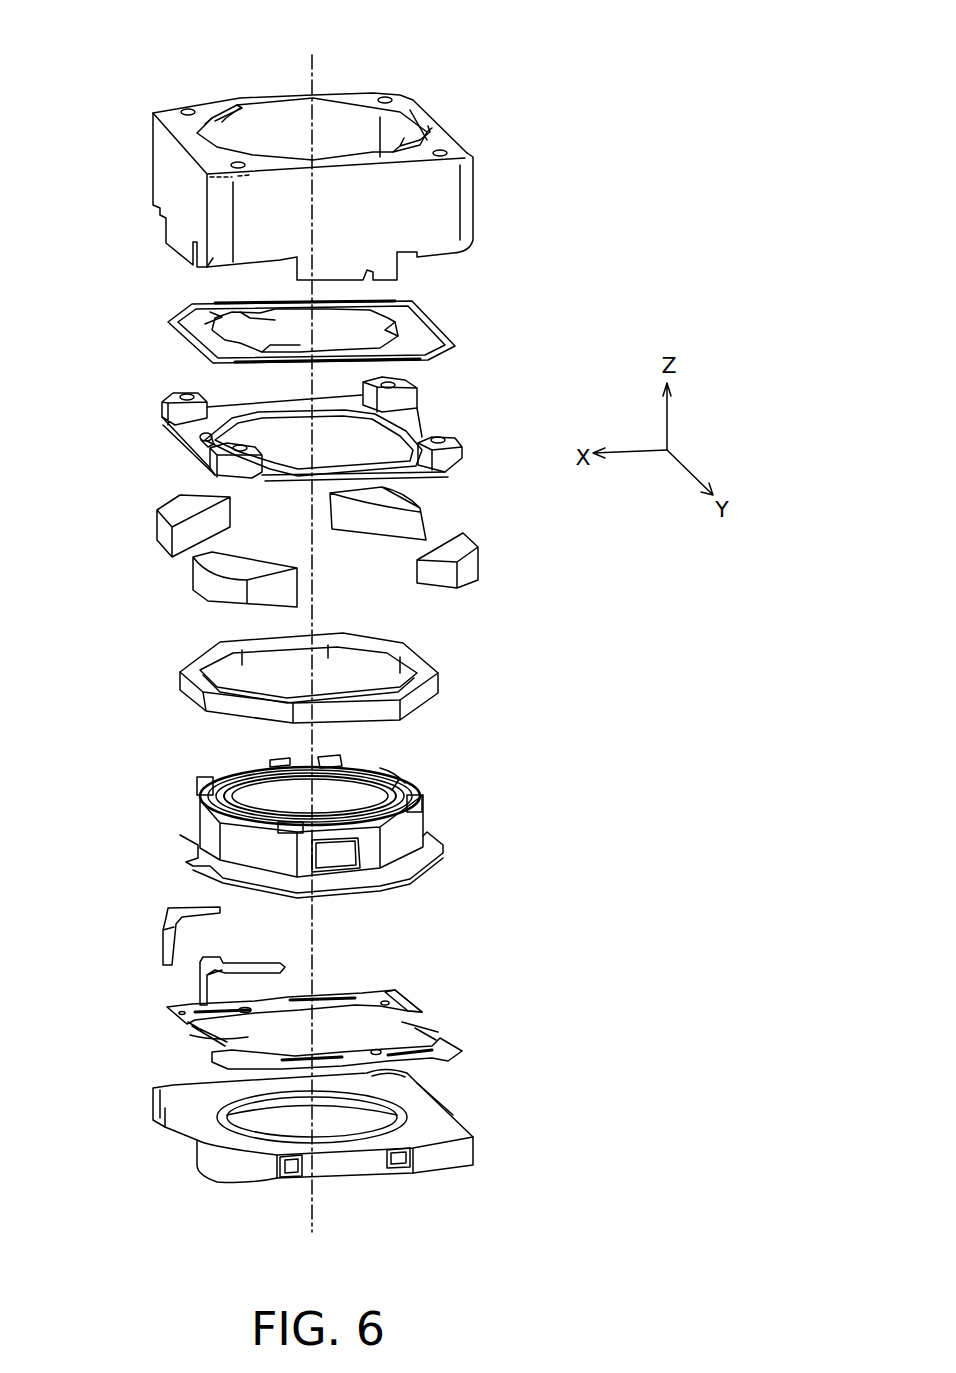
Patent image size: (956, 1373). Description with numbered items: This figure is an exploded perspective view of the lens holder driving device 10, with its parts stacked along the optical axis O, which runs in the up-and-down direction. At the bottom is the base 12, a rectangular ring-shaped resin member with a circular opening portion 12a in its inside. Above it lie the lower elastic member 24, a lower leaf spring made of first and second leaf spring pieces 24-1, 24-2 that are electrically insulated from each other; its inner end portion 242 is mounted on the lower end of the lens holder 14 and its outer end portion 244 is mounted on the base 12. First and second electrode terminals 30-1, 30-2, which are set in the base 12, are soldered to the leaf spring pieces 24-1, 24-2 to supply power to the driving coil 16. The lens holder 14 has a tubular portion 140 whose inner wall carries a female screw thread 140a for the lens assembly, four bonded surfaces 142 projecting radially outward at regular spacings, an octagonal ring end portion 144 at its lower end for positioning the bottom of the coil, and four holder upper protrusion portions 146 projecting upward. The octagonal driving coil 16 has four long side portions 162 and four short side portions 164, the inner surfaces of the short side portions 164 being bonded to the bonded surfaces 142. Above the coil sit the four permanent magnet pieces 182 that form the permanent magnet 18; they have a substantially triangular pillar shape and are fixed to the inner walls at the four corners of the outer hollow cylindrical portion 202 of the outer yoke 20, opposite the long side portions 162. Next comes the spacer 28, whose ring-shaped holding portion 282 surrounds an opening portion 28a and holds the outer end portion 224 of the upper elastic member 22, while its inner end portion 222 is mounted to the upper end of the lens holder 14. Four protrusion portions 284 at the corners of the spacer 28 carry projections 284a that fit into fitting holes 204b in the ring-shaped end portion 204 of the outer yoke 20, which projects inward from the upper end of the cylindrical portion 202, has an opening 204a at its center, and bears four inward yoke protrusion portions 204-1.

The lens holder driving device 10 is at (552, 74).
The base 12 is at (497, 1150).
The circular opening portion 12a is at (395, 1081).
The lens holder 14 is at (409, 766).
The tubular portion 140 is at (412, 813).
The female screw thread 140a is at (400, 778).
The bonded surface 142 is at (330, 857).
The ring end portion 144 is at (420, 873).
The holder upper protrusion portion 146 is at (340, 755).
The driving coil 16 is at (438, 647).
The long side portion 162 is at (383, 637).
The short side portion 164 is at (280, 635).
The permanent magnet 18 is at (120, 545).
The permanent magnet piece 182 is at (156, 505).
The outer yoke 20 is at (496, 204).
The outer hollow cylindrical portion 202 is at (435, 248).
The ring-shaped end portion 204 is at (412, 92).
The opening 204a is at (420, 112).
The cover hole 204b is at (185, 108).
The yoke protrusion portion 204-1 is at (357, 100).
The upper elastic member 22 is at (445, 311).
The inner end portion 222 is at (383, 330).
The outer end portion 224 is at (440, 337).
The lower elastic member 24 is at (431, 999).
The first leaf spring piece 24-1 is at (467, 1058).
The second leaf spring piece 24-2 is at (350, 993).
The inner end portion 242 is at (230, 1038).
The outer end portion 244 is at (383, 990).
The spacer 28 is at (443, 412).
The opening portion 28a is at (200, 432).
The ring-shaped holding portion 282 is at (258, 405).
The protrusion portion 284 is at (162, 413).
The projection 284a is at (185, 395).
The first electrode terminal 30-1 is at (223, 960).
The second electrode terminal 30-2 is at (170, 910).
The optical axis O is at (314, 80).